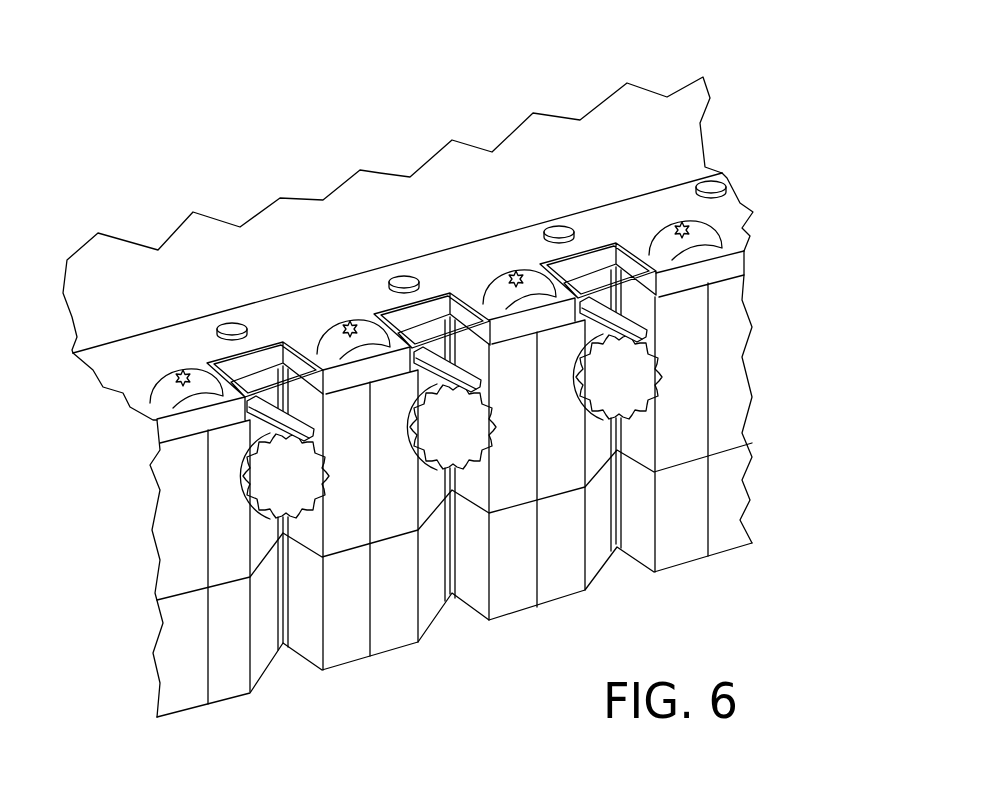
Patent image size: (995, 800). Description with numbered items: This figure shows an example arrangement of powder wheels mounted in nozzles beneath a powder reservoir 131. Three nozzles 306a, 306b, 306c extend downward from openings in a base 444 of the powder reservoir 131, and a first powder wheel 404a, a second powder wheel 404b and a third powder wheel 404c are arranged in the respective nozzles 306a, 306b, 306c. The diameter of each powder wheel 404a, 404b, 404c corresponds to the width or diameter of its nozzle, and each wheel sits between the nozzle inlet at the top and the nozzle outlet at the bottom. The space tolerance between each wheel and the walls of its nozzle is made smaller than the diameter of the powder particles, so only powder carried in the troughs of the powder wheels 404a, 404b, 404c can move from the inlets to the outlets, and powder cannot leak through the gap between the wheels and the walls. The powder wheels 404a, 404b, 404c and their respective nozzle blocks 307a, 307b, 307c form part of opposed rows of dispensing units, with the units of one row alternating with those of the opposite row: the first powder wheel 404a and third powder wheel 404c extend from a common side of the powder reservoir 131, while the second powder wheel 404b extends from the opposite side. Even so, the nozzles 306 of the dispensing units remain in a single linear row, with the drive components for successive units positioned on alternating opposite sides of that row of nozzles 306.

The powder reservoir 131 is at (666, 110).
The base 444 is at (679, 197).
The nozzles 306 is at (452, 575).
The first nozzle 306a is at (227, 337).
The second nozzle 306b is at (408, 280).
The third nozzle 306c is at (597, 262).
The first nozzle block 307a is at (222, 523).
The second nozzle block 307b is at (523, 373).
The third nozzle block 307c is at (688, 435).
The first powder wheel 404a is at (272, 372).
The second powder wheel 404b is at (418, 333).
The third powder wheel 404c is at (700, 242).